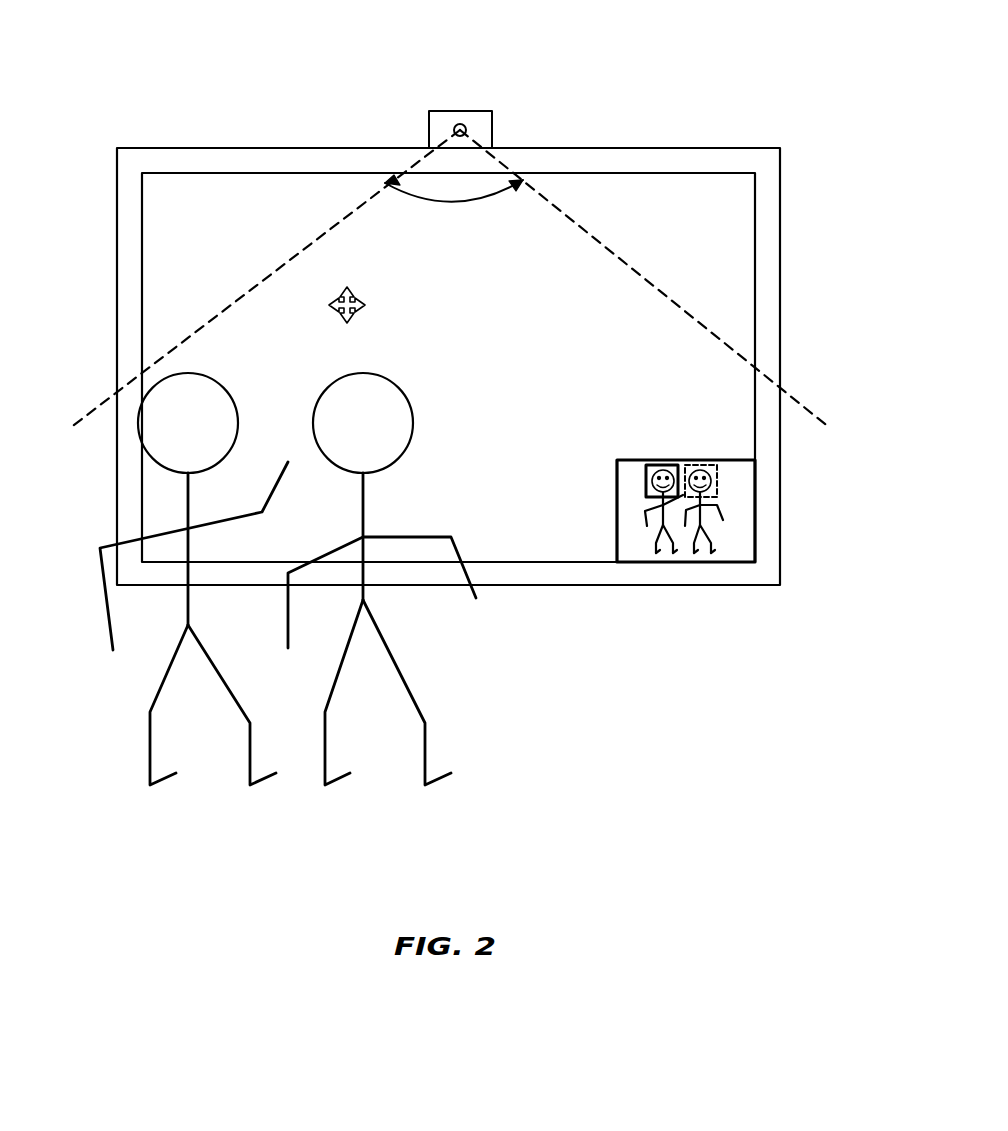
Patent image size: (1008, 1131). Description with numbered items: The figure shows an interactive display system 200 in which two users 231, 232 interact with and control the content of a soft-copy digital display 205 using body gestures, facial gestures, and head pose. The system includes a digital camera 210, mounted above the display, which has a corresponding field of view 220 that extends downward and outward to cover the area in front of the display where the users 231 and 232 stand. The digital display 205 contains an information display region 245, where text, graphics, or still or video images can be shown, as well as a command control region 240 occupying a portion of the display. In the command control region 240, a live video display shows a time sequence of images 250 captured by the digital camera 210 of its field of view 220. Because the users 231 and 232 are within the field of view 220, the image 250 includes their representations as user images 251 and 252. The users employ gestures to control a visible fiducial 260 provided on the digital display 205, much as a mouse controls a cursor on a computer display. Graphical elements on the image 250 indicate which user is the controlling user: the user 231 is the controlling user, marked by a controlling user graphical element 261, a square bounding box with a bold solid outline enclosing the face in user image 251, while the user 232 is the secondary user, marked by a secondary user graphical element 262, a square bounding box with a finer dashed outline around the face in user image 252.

The interactive display system 200 is at (269, 68).
The soft-copy digital display 205 is at (665, 148).
The digital camera 210 is at (460, 110).
The field of view 220 is at (450, 279).
The user 231 is at (152, 780).
The user 232 is at (327, 780).
The command control region 240 is at (721, 538).
The information display region 245 is at (728, 276).
The image 250 is at (632, 499).
The user image 251 is at (635, 538).
The user image 252 is at (692, 538).
The visible fiducial 260 is at (348, 288).
The controlling user graphical element 261 is at (663, 465).
The secondary user graphical element 262 is at (700, 465).